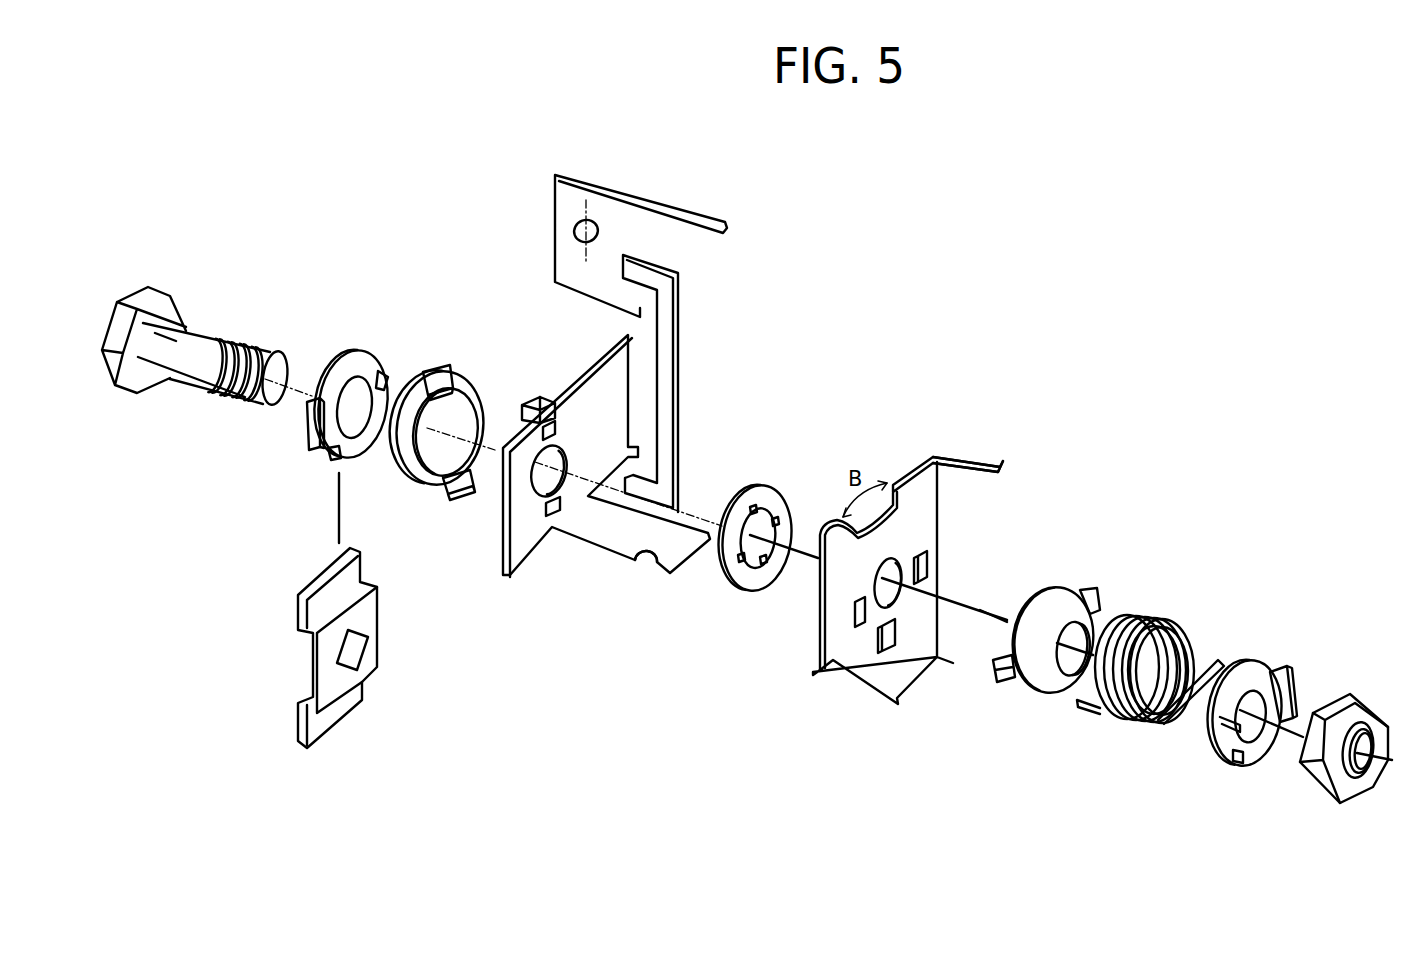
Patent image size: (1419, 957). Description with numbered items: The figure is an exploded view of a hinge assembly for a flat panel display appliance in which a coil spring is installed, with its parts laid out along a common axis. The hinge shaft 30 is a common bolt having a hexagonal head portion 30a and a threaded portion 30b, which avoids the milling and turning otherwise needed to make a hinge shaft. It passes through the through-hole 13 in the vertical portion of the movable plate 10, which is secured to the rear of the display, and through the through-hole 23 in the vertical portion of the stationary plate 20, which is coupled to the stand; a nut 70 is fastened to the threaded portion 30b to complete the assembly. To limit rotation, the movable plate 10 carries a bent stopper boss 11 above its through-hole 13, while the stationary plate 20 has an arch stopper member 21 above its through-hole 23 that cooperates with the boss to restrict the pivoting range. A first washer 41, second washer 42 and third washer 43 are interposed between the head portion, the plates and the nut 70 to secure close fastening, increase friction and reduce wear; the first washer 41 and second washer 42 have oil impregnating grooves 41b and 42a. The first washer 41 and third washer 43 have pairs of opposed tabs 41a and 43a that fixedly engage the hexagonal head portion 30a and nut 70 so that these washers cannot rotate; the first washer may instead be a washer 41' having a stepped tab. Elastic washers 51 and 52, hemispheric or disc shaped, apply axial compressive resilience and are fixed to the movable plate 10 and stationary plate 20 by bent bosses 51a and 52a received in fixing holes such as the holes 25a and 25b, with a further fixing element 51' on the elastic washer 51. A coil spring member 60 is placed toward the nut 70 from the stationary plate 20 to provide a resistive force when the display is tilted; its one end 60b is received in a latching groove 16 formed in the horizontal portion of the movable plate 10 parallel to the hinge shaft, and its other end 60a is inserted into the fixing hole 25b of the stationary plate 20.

The movable plate 10 is at (632, 208).
The bent stopper boss 11 is at (548, 395).
The through-hole 13 is at (556, 478).
The latching groove 16 is at (643, 565).
The stationary plate 20 is at (923, 480).
The arch stopper member 21 is at (878, 493).
The through-hole 23 is at (897, 603).
The slot 25a is at (930, 570).
The fixing hole 25b is at (890, 648).
The hinge shaft 30 is at (230, 340).
The hexagonal head portion 30a is at (163, 300).
The threaded portion 30b is at (262, 350).
The first washer 41 is at (351, 383).
The tabs 41a is at (312, 426).
The oil impregnating grooves 41b is at (386, 370).
The washer having a stepped tab 41' is at (380, 648).
The second washer 42 is at (756, 488).
The oil impregnating grooves 42a is at (772, 510).
The third washer 43 is at (1248, 660).
The tabs 43a is at (1280, 673).
The elastic washer 51 is at (449, 409).
The bent boss 51a is at (441, 370).
The bent tab of spacer ring 51' is at (442, 508).
The elastic washer 52 is at (1030, 597).
The bent boss 52a is at (1082, 588).
The coil spring member 60 is at (1143, 727).
The other end of the coil spring member 60a is at (1073, 700).
The one end of the coil spring member 60b is at (1217, 657).
The nut 70 is at (1328, 795).